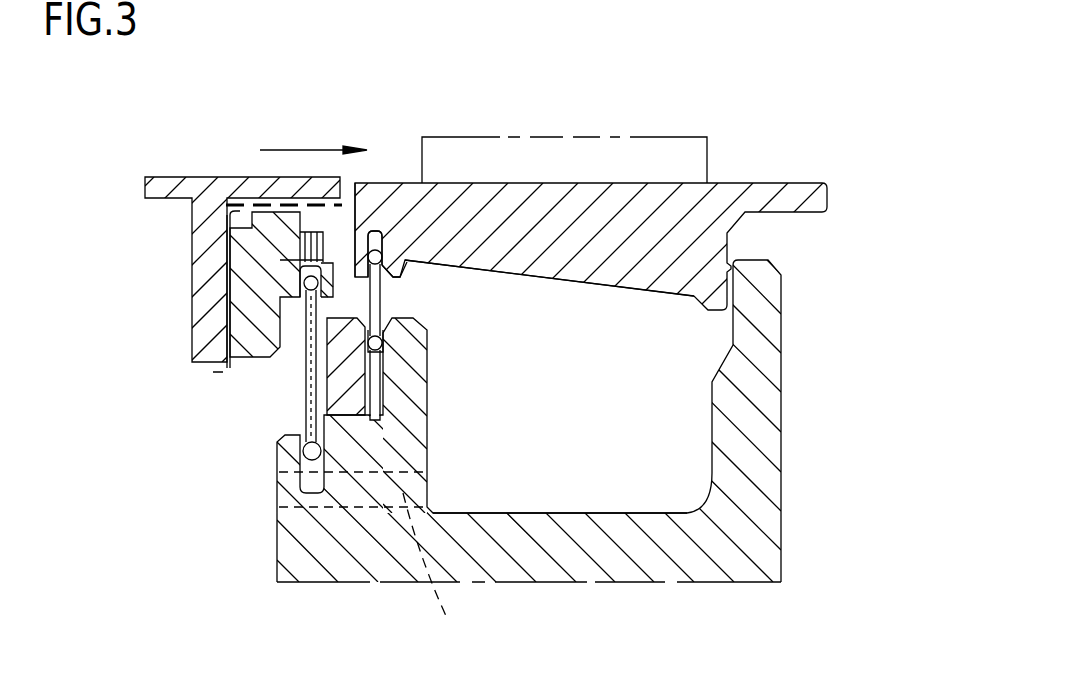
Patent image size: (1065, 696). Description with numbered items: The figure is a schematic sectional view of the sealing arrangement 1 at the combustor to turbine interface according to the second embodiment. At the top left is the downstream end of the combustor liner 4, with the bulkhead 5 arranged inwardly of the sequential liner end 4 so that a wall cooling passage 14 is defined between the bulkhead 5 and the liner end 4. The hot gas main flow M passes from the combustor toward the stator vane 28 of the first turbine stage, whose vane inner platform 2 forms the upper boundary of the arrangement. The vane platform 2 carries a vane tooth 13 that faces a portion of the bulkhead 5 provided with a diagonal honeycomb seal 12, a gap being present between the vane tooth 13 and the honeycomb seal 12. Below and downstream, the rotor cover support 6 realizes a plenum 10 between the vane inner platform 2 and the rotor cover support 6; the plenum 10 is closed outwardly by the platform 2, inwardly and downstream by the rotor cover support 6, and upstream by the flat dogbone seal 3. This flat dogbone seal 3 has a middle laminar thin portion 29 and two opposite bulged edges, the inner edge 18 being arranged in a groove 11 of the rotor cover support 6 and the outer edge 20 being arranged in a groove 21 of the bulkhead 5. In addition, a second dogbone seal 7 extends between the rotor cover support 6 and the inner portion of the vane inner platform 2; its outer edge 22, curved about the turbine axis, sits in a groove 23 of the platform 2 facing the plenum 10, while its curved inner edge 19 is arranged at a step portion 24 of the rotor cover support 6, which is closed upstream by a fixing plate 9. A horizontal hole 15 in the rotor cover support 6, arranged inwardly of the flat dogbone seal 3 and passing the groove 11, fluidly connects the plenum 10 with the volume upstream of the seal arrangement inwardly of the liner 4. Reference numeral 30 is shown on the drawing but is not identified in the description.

The sealing arrangement 1 is at (698, 96).
The vane inner platform 2 is at (757, 206).
The flat dogbone seal 3 is at (284, 411).
The combustor liner 4 is at (146, 180).
The bulkhead 5 is at (236, 314).
The rotor cover support 6 is at (560, 548).
The second dogbone seal 7 is at (386, 297).
The fixing plate 9 is at (379, 420).
The plenum 10 is at (612, 486).
The groove 11 is at (327, 478).
The diagonal honeycomb seal 12 is at (294, 257).
The vane tooth 13 is at (358, 207).
The wall cooling passage 14 is at (230, 180).
The hole 15 is at (436, 571).
The inner edge 18 is at (308, 455).
The inner edge 19 is at (427, 322).
The outer edge 20 is at (306, 292).
The groove 21 is at (304, 285).
The outer edge 22 is at (400, 256).
The groove 23 is at (380, 252).
The step portion 24 is at (423, 333).
The stator vane 28 is at (647, 172).
The middle laminar thin portion 29 is at (307, 381).
The hook 30 is at (389, 262).
The main flow M is at (273, 150).